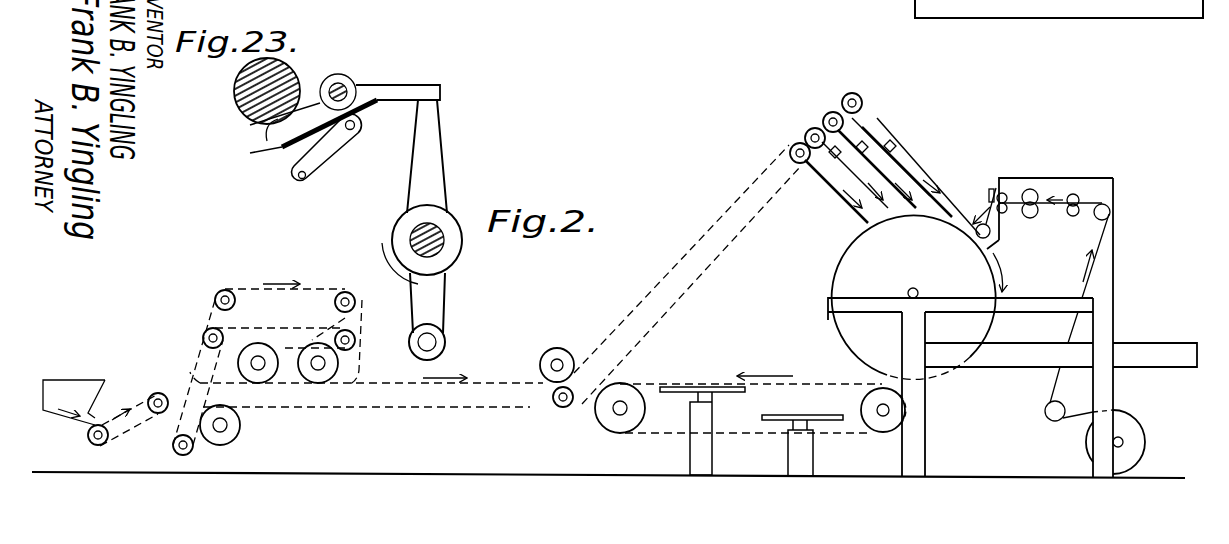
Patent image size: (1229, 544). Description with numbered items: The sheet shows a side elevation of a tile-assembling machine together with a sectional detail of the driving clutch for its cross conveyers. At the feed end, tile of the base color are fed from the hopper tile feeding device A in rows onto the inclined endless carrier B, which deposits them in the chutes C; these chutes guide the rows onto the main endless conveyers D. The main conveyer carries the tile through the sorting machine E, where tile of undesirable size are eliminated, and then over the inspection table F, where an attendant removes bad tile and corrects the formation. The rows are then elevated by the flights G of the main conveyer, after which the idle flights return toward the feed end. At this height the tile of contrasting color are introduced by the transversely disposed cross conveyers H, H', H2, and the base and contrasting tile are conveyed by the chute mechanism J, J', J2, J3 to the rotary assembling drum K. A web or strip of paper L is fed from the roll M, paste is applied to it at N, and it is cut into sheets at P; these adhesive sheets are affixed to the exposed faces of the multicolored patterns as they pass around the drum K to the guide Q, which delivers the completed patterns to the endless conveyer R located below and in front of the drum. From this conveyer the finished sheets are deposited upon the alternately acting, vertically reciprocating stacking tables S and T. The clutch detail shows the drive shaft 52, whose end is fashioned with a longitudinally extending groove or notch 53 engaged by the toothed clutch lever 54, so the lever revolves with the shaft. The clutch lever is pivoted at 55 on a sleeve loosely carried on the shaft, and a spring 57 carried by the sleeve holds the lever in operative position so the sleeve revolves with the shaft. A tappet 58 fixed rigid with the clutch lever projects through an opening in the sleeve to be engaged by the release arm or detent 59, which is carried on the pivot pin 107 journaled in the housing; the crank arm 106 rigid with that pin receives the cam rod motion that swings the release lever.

In FIG. 23, the drive shaft 52 is at (236, 88).
In FIG. 23, the groove or notch 53 is at (260, 130).
In FIG. 23, the toothed clutch lever 54 is at (268, 143).
In FIG. 23, the pivot 55 is at (343, 85).
In FIG. 23, the spring 57 is at (330, 146).
In FIG. 23, the tappet 58 is at (422, 71).
In FIG. 23, the release arm or detent 59 is at (441, 120).
In FIG. 23, the crank arm 106 is at (353, 227).
In FIG. 23, the pivot pin 107 is at (420, 232).
In FIG. 2, the hopper tile feeding device A is at (65, 386).
In FIG. 2, the inclined endless carrier B is at (134, 406).
In FIG. 2, the chutes C is at (175, 418).
In FIG. 2, the main endless conveyers D is at (193, 383).
In FIG. 2, the sorting machine E is at (281, 349).
In FIG. 2, the inspection table F is at (382, 377).
In FIG. 2, the flights of the main conveyer G is at (725, 202).
In FIG. 2, the cross conveyer H is at (882, 151).
In FIG. 2, the cross conveyer H' is at (891, 135).
In FIG. 2, the cross conveyer H2 is at (823, 132).
In FIG. 2, the chute mechanism J is at (842, 203).
In FIG. 2, the chute mechanism J' is at (819, 196).
In FIG. 2, the chute mechanism J2 is at (888, 168).
In FIG. 2, the chute mechanism J3 is at (905, 170).
In FIG. 2, the rotary assembling drum K is at (837, 280).
In FIG. 2, the web or strip of paper L is at (1047, 382).
In FIG. 2, the roll M is at (1135, 421).
In FIG. 2, the paste applying station N is at (1004, 197).
In FIG. 2, the cutting station P is at (990, 186).
In FIG. 2, the guide Q is at (932, 378).
In FIG. 2, the endless conveyer R is at (820, 366).
In FIG. 2, the stacking table S is at (689, 386).
In FIG. 2, the stacking table T is at (797, 417).